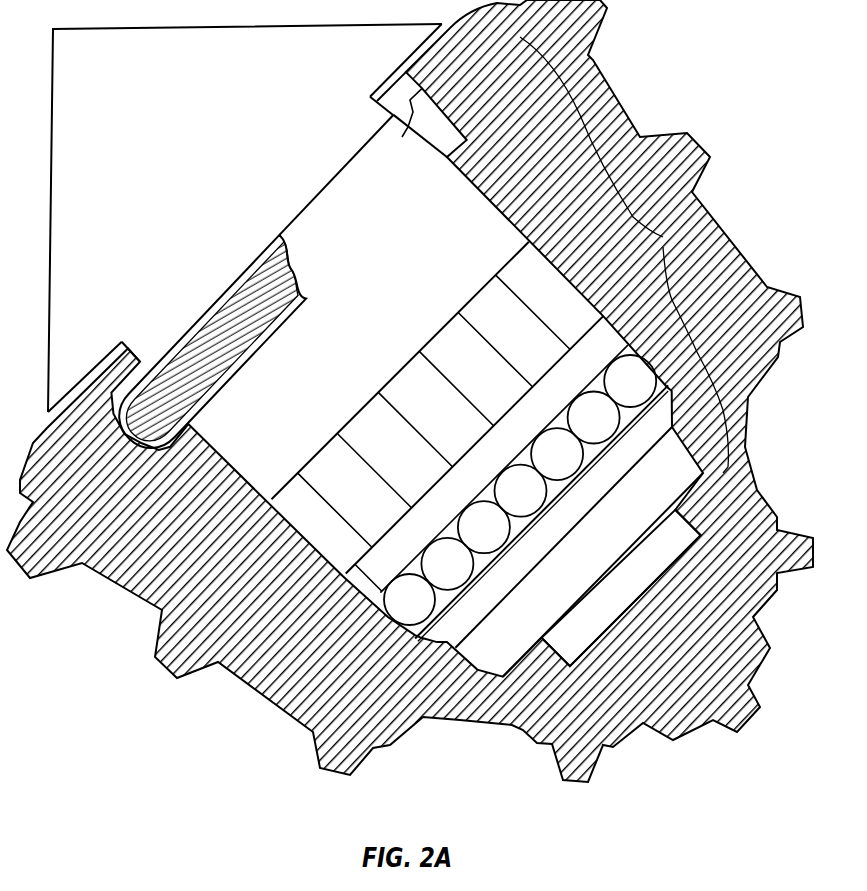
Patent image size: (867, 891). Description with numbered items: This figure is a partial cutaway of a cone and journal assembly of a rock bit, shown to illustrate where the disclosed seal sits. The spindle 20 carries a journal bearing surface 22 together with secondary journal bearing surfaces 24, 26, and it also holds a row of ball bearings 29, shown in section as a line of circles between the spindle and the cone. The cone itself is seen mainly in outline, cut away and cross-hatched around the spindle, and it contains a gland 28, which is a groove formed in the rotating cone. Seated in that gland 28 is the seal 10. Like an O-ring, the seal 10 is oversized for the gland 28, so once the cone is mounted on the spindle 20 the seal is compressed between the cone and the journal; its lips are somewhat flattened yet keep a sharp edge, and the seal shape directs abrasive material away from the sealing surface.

The seal 10 is at (450, 143).
The spindle 20 is at (665, 235).
The journal bearing surface 22 is at (383, 340).
The secondary journal bearing surface 24 is at (596, 553).
The secondary journal bearing surface 26 is at (679, 557).
The gland 28 is at (447, 110).
The ball bearings 29 is at (421, 613).